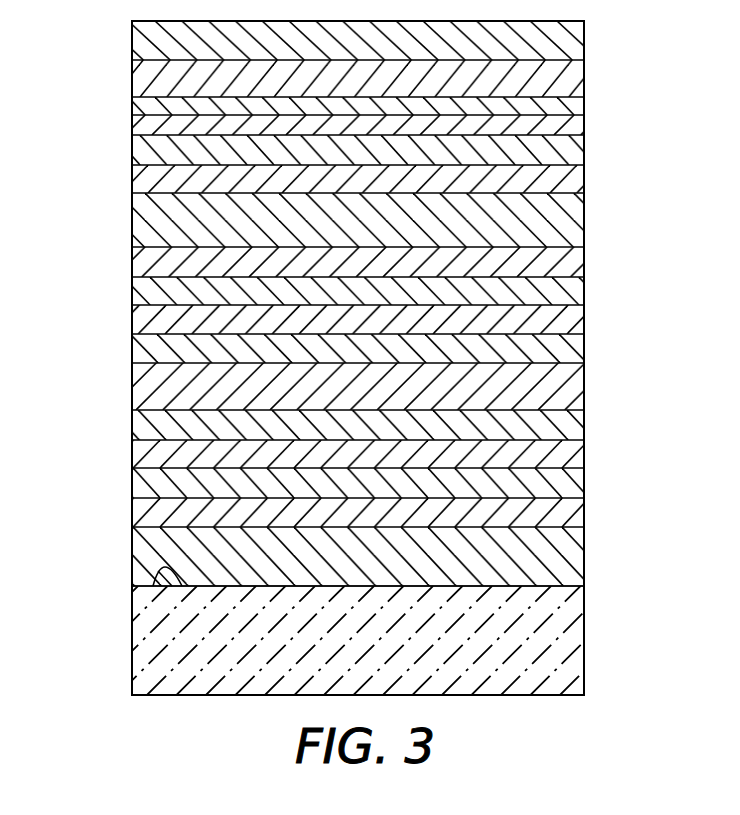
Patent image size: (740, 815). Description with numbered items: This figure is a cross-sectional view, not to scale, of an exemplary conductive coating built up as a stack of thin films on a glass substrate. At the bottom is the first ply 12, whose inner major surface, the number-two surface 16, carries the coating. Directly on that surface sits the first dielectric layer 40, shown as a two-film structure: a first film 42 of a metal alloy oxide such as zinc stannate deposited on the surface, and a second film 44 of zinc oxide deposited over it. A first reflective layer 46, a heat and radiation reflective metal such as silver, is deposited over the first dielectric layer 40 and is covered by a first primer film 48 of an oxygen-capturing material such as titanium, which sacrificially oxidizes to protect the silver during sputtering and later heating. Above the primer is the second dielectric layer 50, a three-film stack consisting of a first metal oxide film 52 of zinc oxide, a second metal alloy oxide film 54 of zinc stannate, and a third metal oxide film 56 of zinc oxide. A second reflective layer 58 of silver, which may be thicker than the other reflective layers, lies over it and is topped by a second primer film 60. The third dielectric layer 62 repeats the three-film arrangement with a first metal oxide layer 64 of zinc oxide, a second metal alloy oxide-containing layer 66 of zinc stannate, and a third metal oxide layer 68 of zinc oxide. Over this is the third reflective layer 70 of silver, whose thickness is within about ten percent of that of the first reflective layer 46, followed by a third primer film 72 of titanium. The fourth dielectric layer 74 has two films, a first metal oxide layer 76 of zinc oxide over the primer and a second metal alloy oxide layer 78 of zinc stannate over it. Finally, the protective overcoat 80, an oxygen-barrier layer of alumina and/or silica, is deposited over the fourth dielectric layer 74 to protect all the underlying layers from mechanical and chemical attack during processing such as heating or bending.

The first ply 12 is at (132, 653).
The No. 2 surface 16 is at (132, 600).
The first dielectric layer 40 is at (358, 542).
The first film 42 is at (132, 563).
The second film 44 is at (132, 515).
The first reflective layer 46 is at (577, 483).
The first primer film 48 is at (132, 452).
The second dielectric layer 50 is at (358, 386).
The first metal oxide film 52 is at (132, 428).
The second metal alloy oxide film 54 is at (132, 387).
The third metal oxide film 56 is at (132, 353).
The second reflective layer 58 is at (577, 325).
The second primer film 60 is at (132, 295).
The third dielectric layer 62 is at (358, 224).
The first metal oxide layer 64 is at (132, 260).
The second metal alloy oxide-containing layer 66 is at (132, 227).
The third metal oxide layer 68 is at (132, 185).
The third reflective layer 70 is at (570, 152).
The third primer film 72 is at (132, 128).
The fourth dielectric layer 74 is at (358, 106).
The first metal oxide layer 76 is at (140, 108).
The second metal alloy oxide layer 78 is at (132, 82).
The protective overcoat 80 is at (132, 43).